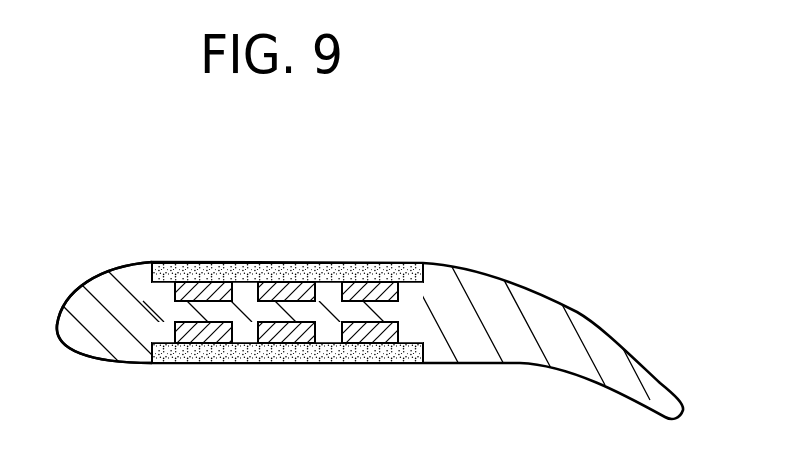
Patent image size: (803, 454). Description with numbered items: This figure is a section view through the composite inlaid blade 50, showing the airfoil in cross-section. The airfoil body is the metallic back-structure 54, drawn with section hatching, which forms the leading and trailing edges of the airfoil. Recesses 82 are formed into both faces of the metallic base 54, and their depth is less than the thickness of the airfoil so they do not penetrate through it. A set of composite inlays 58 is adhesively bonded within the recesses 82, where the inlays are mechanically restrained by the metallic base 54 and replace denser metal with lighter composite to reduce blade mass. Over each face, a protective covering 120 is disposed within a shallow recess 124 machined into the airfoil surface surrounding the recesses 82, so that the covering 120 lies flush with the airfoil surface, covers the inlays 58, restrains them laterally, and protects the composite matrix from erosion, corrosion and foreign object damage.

The composite inlaid blade 50 is at (130, 218).
The metallic back-structure 54 is at (545, 312).
The composite inlays 58 is at (203, 338).
The recesses 82 is at (320, 285).
The protective covering 120 is at (378, 268).
The recess 124 is at (245, 281).